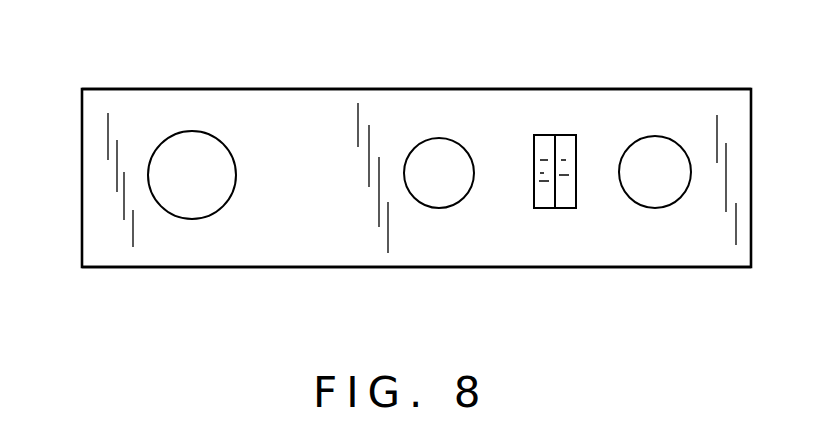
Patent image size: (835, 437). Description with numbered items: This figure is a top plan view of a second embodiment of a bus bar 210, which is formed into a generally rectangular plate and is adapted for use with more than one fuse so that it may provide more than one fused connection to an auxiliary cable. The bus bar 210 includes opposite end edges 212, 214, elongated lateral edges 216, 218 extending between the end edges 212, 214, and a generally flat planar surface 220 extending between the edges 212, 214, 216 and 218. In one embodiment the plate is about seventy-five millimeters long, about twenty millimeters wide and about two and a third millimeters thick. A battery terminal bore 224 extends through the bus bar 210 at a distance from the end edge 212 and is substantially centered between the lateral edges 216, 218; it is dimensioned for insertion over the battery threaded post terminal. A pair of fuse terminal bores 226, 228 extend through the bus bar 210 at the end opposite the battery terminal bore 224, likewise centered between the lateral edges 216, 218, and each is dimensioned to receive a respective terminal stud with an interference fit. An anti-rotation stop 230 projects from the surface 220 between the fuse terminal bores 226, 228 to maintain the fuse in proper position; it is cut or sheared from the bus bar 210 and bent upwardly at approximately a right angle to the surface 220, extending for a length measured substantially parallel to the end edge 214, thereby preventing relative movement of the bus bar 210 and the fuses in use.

The bus bar 210 is at (364, 74).
The end edge 212 is at (82, 192).
The end edge 214 is at (751, 177).
The lateral edge 216 is at (487, 89).
The lateral edge 218 is at (472, 267).
The planar surface 220 is at (292, 227).
The battery terminal bore 224 is at (207, 157).
The fuse terminal bore 226 is at (442, 162).
The fuse terminal bore 228 is at (650, 148).
The anti-rotation stop 230 is at (560, 149).